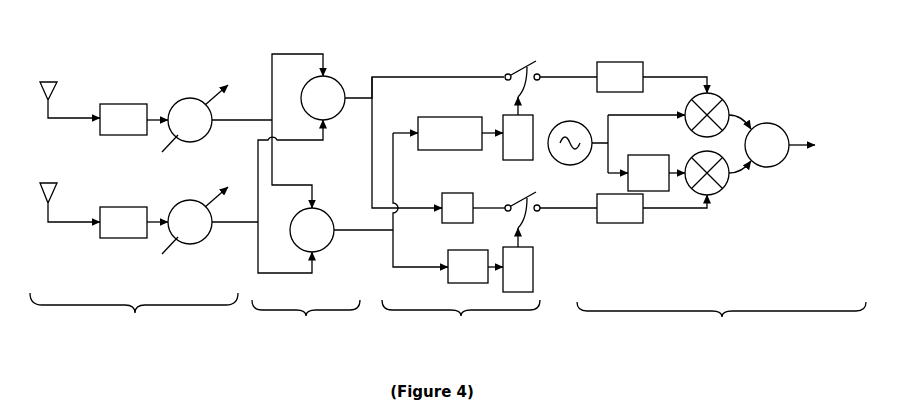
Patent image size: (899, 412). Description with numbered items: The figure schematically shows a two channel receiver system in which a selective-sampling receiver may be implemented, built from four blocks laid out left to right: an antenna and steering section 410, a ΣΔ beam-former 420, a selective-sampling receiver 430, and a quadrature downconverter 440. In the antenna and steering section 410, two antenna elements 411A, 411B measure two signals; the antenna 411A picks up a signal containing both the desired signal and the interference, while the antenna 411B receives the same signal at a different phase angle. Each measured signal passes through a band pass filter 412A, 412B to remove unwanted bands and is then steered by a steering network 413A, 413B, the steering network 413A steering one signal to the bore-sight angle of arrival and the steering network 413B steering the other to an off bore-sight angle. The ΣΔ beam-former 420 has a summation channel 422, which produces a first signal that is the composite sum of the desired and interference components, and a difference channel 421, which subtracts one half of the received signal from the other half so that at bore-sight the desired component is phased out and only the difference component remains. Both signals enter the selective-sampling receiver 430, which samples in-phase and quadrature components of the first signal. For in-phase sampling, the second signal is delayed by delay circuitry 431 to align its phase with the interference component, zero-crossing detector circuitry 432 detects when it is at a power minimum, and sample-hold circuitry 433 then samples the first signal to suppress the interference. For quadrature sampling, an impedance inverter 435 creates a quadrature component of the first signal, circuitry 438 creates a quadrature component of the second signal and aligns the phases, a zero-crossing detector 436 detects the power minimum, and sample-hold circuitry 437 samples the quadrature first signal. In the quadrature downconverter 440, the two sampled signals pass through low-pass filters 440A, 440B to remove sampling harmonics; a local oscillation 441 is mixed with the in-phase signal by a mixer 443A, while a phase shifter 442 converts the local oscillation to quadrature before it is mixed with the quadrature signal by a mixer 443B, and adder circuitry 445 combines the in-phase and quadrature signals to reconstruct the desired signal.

The antenna and steering section 410 is at (134, 327).
The antenna element 411A is at (44, 80).
The antenna element 411B is at (44, 182).
The band pass filter 412A is at (119, 103).
The band pass filter 412B is at (116, 206).
The steering network 413A is at (212, 140).
The steering network 413B is at (208, 243).
The ΣΔ beam-former 420 is at (306, 330).
The difference channel 421 is at (322, 210).
The summation channel 422 is at (337, 76).
The selective-sampling receiver 430 is at (461, 330).
The delay circuitry 431 is at (442, 117).
The zero-crossing detector circuitry 432 is at (498, 116).
The sample-hold circuitry 433 is at (530, 36).
The impedance inverter 435 is at (445, 233).
The zero-crossing detector 436 is at (535, 256).
The sample-hold circuitry 437 is at (535, 218).
The circuitry 438 is at (444, 278).
The quadrature downconverter 440 is at (721, 331).
The low-pass filter 440A is at (615, 57).
The low-pass filter 440B is at (617, 226).
The local oscillation 441 is at (566, 121).
The phase shifter 442 is at (652, 155).
The mixer 443A is at (723, 95).
The mixer 443B is at (723, 192).
The adder circuitry 445 is at (787, 123).